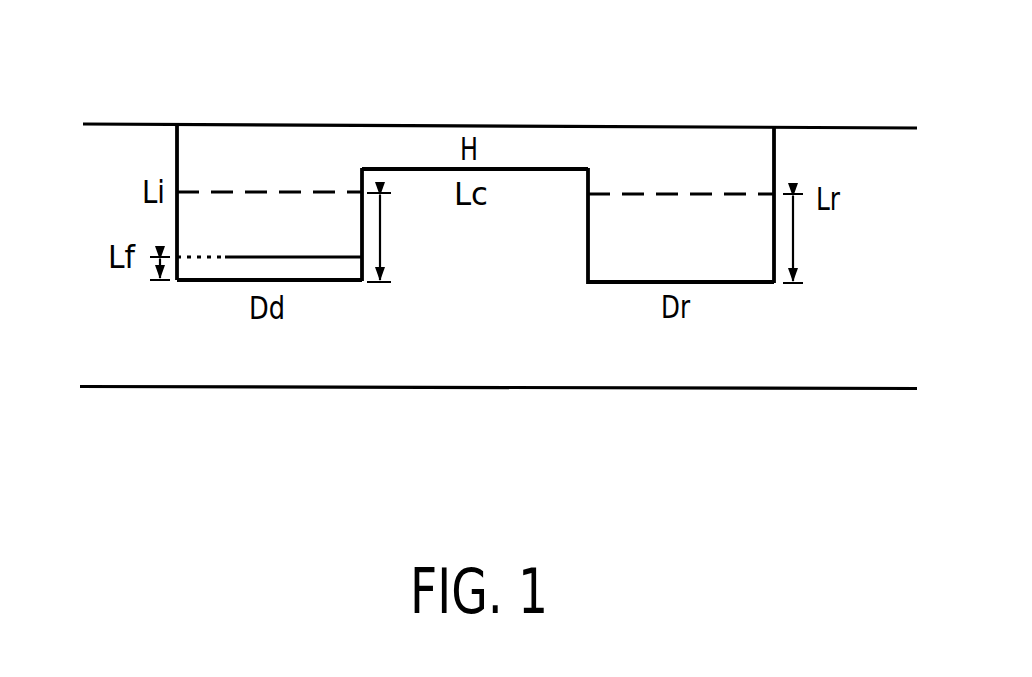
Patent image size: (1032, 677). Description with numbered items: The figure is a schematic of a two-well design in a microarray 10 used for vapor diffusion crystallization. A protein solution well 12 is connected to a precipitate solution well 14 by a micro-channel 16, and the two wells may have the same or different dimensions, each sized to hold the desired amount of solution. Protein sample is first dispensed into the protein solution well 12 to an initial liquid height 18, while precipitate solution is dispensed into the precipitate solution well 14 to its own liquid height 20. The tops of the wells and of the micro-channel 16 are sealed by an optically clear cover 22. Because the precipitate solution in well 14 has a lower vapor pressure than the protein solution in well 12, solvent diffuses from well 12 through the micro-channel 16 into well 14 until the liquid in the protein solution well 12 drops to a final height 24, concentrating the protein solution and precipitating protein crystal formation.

The microarray 10 is at (263, 412).
The protein solution well 12 is at (327, 243).
The precipitate solution well 14 is at (735, 267).
The micro-channel 16 is at (547, 145).
The initial liquid height 18 is at (390, 237).
The liquid height 20 is at (803, 247).
The optically clear cover 22 is at (690, 115).
The final height 24 is at (147, 270).